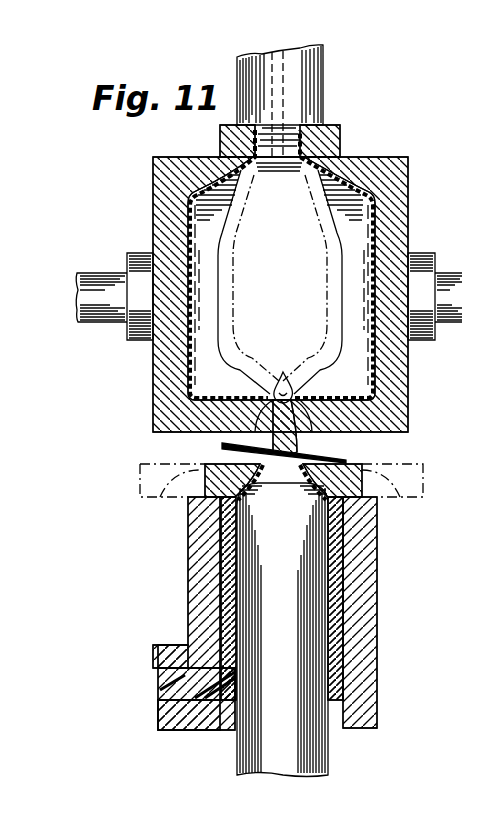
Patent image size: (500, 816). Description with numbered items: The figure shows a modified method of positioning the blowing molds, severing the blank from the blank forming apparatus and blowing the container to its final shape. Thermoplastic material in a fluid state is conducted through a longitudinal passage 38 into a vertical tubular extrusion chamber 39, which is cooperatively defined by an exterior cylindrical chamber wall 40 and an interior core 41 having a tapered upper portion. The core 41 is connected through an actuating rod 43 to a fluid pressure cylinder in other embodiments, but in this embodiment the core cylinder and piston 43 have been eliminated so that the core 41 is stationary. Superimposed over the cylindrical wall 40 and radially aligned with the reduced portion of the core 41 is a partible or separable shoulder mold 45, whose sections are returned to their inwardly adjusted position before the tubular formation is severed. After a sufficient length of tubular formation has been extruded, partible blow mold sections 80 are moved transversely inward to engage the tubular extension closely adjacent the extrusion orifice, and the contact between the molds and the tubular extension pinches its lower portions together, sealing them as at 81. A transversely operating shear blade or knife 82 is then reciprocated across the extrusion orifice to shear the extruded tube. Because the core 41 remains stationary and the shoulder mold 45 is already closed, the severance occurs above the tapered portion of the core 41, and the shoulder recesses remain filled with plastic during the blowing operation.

The partible blow mold sections 80 is at (153, 182).
The sealed pinched portion 81 is at (286, 372).
The shear blade 82 is at (318, 456).
The shoulder mold 45 is at (208, 466).
The tubular extrusion chamber 39 is at (335, 540).
The exterior cylindrical chamber wall 40 is at (368, 568).
The interior core 41 is at (318, 622).
The longitudinal passage 38 is at (168, 683).
The actuating rod 43 is at (325, 751).